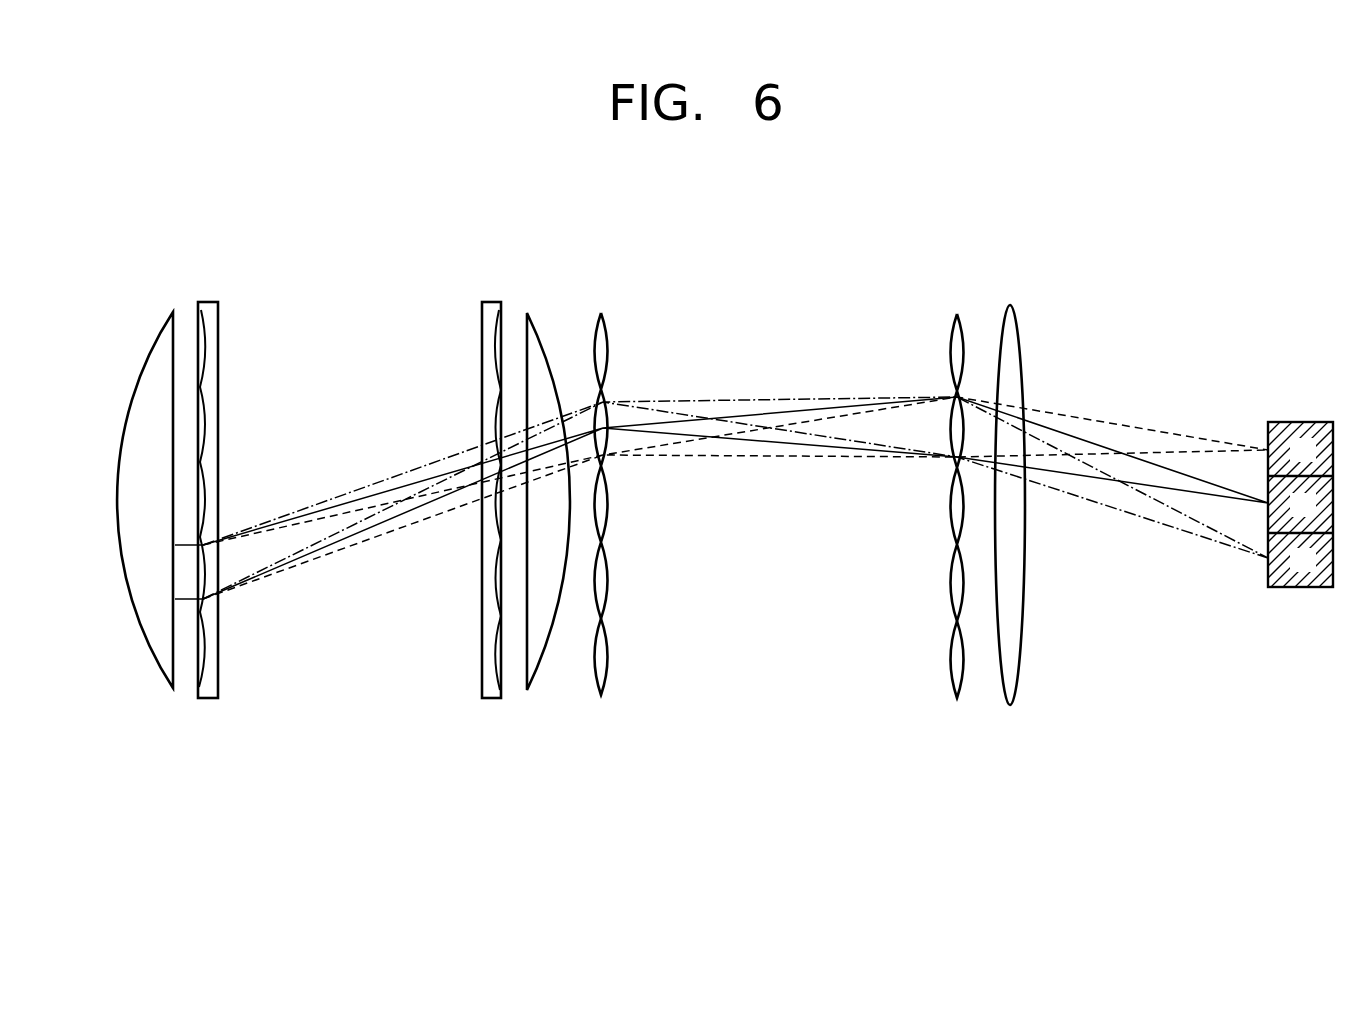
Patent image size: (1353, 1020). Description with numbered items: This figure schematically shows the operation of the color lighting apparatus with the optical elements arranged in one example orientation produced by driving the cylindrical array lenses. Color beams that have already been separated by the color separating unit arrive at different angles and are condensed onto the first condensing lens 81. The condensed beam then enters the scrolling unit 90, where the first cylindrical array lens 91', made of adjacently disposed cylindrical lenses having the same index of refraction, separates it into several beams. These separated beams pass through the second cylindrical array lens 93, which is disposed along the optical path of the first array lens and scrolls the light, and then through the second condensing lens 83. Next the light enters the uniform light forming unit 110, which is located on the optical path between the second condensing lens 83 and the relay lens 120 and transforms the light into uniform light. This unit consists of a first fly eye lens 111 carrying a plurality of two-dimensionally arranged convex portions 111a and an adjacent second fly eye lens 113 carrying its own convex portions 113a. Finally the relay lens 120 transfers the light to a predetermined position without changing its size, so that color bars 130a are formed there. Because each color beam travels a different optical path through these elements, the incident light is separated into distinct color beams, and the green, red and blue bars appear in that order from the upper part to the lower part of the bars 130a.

The first condensing lens 81 is at (170, 312).
The scrolling unit 90 is at (487, 211).
The first cylindrical array lens 91' is at (240, 459).
The second cylindrical array lens 93 is at (491, 302).
The second condensing lens 83 is at (537, 313).
The uniform light forming unit 110 is at (638, 216).
The first fly eye lens 111 is at (621, 509).
The convex portions 111a is at (607, 670).
The second fly eye lens 113 is at (935, 512).
The convex portions 113a is at (953, 670).
The relay lens 120 is at (1011, 305).
The color bars 130a is at (1302, 422).